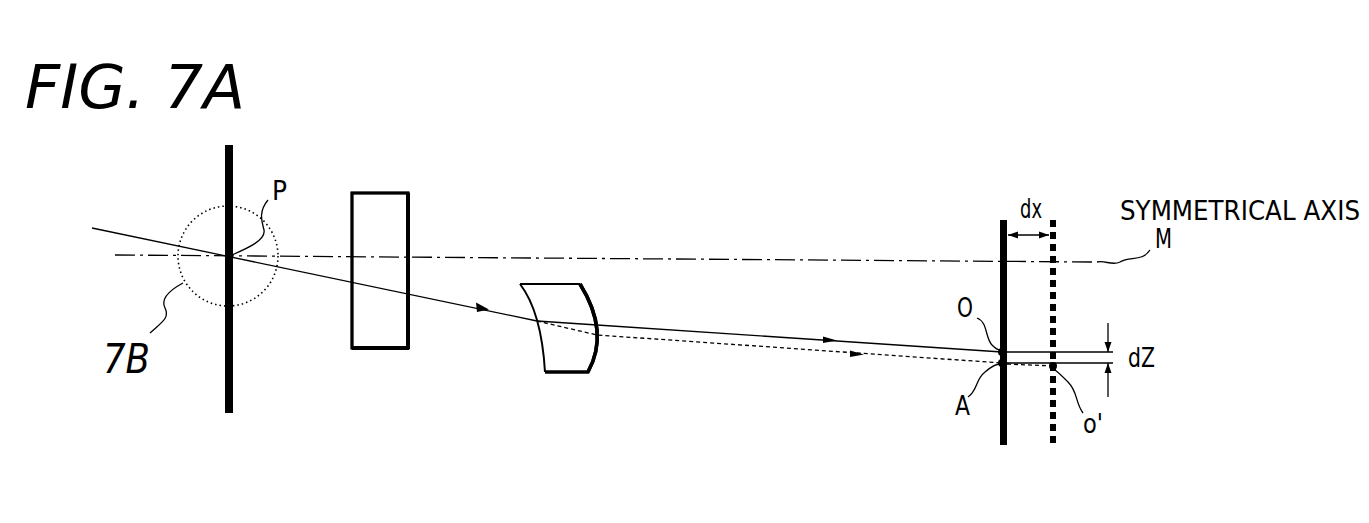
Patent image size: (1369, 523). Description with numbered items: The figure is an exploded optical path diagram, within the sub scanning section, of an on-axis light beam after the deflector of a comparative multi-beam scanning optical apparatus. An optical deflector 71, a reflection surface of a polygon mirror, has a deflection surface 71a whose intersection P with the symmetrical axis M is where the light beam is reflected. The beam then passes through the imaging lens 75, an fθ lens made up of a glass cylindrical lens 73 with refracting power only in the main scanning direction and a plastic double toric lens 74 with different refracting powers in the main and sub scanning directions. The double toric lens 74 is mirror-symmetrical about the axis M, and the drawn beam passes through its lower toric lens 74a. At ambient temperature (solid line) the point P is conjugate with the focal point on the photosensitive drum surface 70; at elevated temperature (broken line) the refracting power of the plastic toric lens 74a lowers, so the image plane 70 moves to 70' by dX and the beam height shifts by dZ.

The photosensitive drum surface 70 is at (972, 314).
The shifted image plane 70' is at (1076, 304).
The optical deflector 71 is at (226, 170).
The deflection surface 71a is at (226, 198).
The cylindrical lens 73 is at (390, 349).
The double toric lens 74 is at (627, 387).
The lower toric lens 74a is at (588, 350).
The imaging lens 75 is at (625, 434).